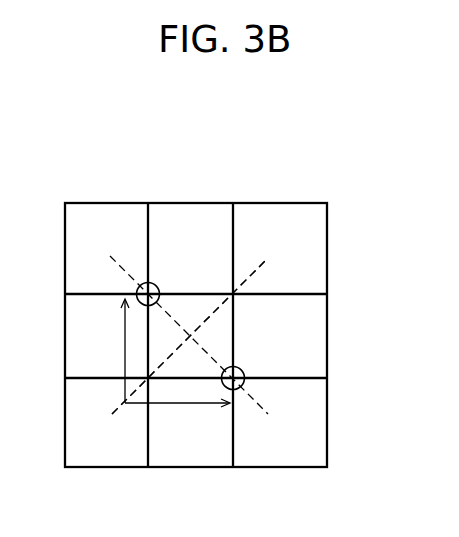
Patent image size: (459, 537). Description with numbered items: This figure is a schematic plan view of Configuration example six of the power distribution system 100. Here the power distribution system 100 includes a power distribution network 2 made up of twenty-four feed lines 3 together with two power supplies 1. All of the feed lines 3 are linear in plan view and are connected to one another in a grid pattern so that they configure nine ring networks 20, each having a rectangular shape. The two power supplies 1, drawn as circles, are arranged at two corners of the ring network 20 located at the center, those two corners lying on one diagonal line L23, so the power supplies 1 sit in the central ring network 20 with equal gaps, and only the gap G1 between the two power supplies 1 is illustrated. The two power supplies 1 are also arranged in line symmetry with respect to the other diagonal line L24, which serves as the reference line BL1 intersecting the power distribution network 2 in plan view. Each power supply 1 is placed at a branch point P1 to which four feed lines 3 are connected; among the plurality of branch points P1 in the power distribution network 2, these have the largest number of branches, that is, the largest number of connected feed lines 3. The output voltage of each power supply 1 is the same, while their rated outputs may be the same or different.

The power distribution system 100 is at (246, 167).
The ring network 20 is at (84, 202).
The power distribution network 2 is at (330, 212).
The feed line 3 is at (351, 232).
The power supply 1 is at (255, 362).
The branch point P1 is at (207, 428).
The gap G1 is at (173, 405).
The diagonal line L23 is at (256, 400).
The diagonal line L24 is at (256, 268).
The reference line BL1 is at (259, 336).